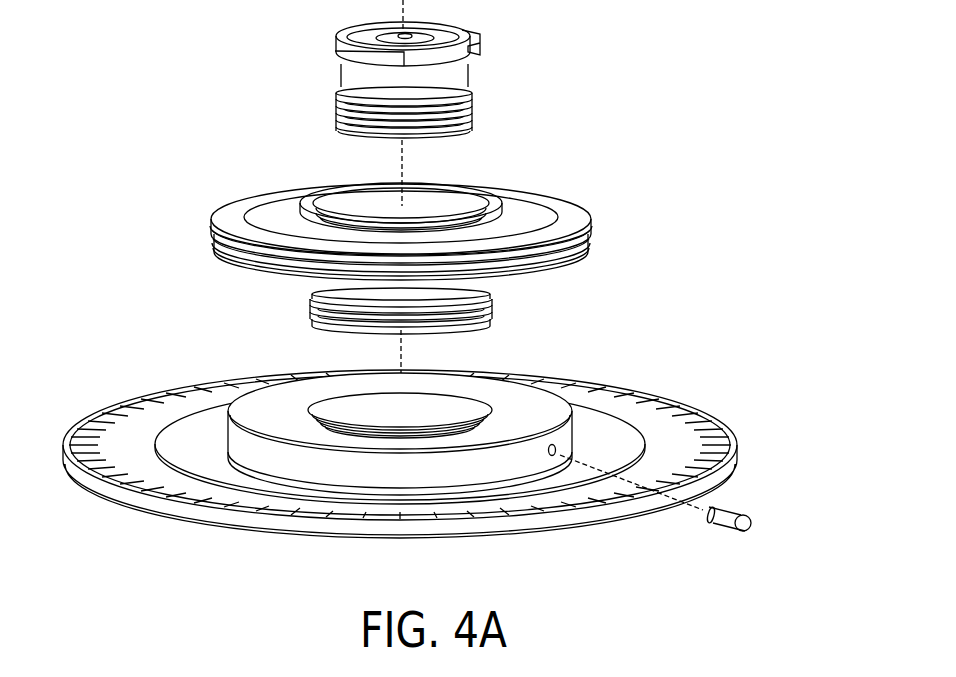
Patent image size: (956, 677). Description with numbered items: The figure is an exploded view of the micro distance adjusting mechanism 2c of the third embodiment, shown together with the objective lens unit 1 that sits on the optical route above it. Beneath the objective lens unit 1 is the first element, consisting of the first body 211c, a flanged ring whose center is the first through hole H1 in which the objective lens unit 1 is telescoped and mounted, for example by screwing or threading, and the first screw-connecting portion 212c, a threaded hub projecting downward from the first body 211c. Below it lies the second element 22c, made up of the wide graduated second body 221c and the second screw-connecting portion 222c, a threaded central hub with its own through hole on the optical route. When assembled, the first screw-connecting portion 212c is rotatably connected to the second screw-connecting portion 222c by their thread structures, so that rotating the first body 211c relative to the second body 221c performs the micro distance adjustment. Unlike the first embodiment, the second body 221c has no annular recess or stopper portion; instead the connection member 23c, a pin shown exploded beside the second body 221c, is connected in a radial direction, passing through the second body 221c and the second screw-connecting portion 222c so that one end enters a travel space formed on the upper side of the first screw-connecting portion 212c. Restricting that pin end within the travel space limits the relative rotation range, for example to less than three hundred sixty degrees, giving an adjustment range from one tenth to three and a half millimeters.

The objective lens unit 1 is at (477, 35).
The micro distance adjusting mechanism 2c is at (812, 559).
The first body 211c is at (592, 232).
The first through hole H1 is at (352, 211).
The first screw-connecting portion 212c is at (483, 303).
The second element 22c is at (683, 393).
The second body 221c is at (731, 468).
The second screw-connecting portion 222c is at (437, 427).
The connection member 23c is at (729, 516).